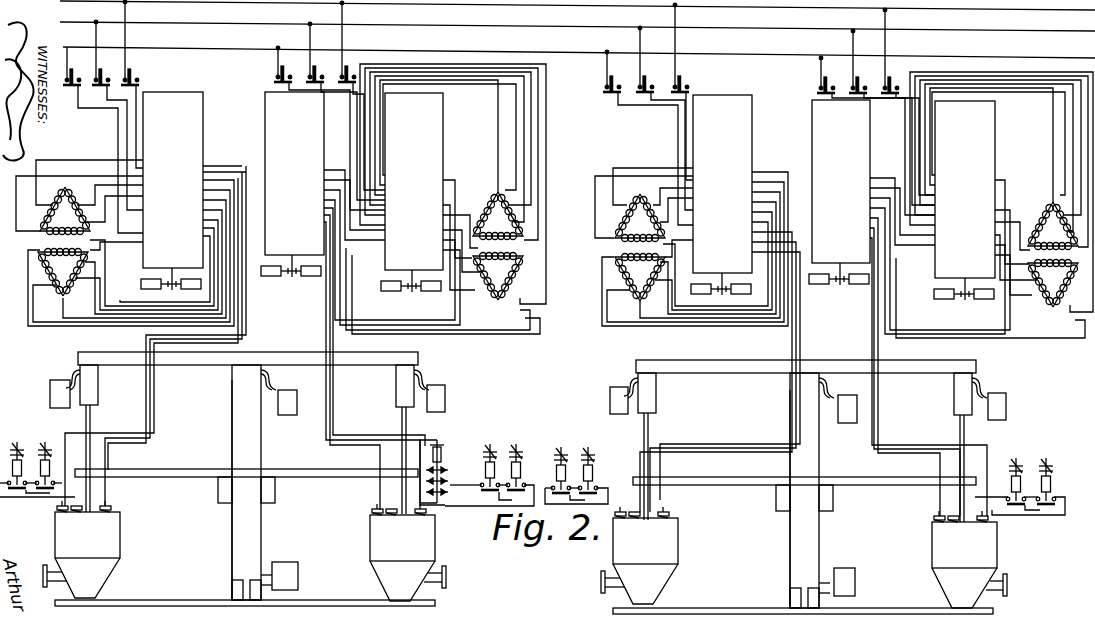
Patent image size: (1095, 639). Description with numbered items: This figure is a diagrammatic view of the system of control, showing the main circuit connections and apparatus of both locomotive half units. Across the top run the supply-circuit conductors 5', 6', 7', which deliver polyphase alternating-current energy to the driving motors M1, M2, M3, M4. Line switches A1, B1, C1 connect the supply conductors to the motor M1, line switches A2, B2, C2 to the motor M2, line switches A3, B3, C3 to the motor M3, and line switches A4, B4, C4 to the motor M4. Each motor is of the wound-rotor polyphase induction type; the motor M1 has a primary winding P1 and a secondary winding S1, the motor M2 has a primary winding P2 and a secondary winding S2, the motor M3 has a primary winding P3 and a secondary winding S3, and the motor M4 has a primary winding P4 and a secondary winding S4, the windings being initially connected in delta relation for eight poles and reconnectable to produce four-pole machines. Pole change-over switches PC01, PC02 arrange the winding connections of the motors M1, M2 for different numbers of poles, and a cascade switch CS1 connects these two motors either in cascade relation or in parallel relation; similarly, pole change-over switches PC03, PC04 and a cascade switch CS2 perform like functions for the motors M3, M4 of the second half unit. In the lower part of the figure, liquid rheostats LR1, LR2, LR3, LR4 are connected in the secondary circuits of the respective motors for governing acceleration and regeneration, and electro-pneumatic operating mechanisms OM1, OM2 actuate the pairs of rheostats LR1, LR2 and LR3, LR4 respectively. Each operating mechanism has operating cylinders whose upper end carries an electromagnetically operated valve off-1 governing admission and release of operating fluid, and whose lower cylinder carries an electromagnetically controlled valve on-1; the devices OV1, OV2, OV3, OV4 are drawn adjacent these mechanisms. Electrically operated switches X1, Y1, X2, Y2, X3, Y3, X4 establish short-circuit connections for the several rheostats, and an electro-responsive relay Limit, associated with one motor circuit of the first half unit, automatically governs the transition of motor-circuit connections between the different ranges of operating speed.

The supply-circuit conductor 5' is at (577, 12).
The supply-circuit conductor 6' is at (577, 36).
The supply-circuit conductor 7' is at (579, 60).
The line switch A1 is at (103, 140).
The line switch B1 is at (117, 115).
The line switch C1 is at (132, 84).
The line switch A2 is at (329, 128).
The line switch B2 is at (345, 111).
The line switch C2 is at (361, 95).
The line switch A3 is at (648, 137).
The line switch B3 is at (664, 118).
The line switch C3 is at (682, 91).
The line switch A4 is at (876, 135).
The line switch B4 is at (892, 117).
The line switch C4 is at (908, 101).
The pole change-over switch PC01 is at (172, 191).
The pole change-over switch PC02 is at (412, 192).
The pole change-over switch PC03 is at (721, 195).
The pole change-over switch PC04 is at (964, 200).
The cascade switch CS1 is at (292, 184).
The cascade switch CS2 is at (839, 192).
The driving motor M1 is at (52, 241).
The driving motor M2 is at (513, 246).
The driving motor M3 is at (623, 247).
The driving motor M4 is at (1017, 254).
The primary winding P1 is at (65, 211).
The primary winding P2 is at (498, 216).
The primary winding P3 is at (640, 218).
The primary winding P4 is at (1053, 226).
The secondary winding S1 is at (63, 273).
The secondary winding S2 is at (533, 250).
The secondary winding S3 is at (604, 249).
The secondary winding S4 is at (1053, 284).
The overload valve OV1 is at (50, 396).
The overload valve OV2 is at (445, 400).
The overload valve OV3 is at (610, 400).
The overload valve OV4 is at (1006, 407).
The electromagnetically operated valve off-1 is at (300, 402).
The electromagnetically controlled valve on-1 is at (298, 576).
The electro-pneumatic operating mechanism OM1 is at (262, 455).
The electro-pneumatic operating mechanism OM2 is at (822, 463).
The liquid rheostat LR1 is at (81, 549).
The liquid rheostat LR2 is at (408, 552).
The liquid rheostat LR3 is at (639, 555).
The liquid rheostat LR4 is at (969, 559).
The electrically operated switch X1 is at (17, 462).
The electrically operated switch Y1 is at (45, 462).
The electrically operated switch X2 is at (490, 464).
The electrically operated switch Y2 is at (516, 464).
The electrically operated switch X3 is at (561, 466).
The electrically operated switch Y3 is at (588, 466).
The electrically operated switch X4 is at (1031, 477).
The electro-responsive relay Limit is at (441, 455).